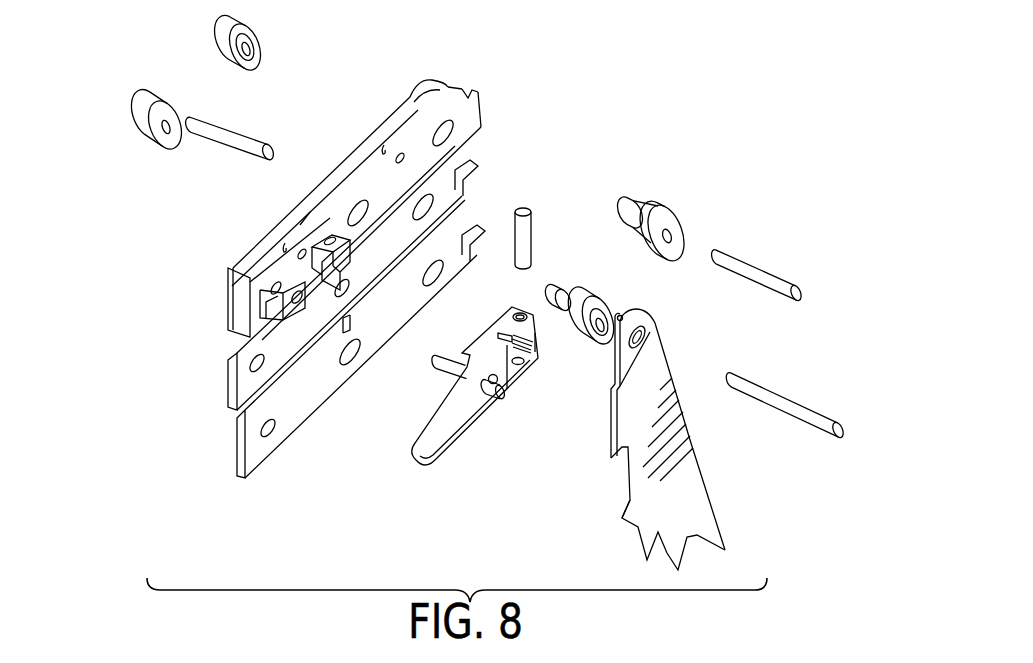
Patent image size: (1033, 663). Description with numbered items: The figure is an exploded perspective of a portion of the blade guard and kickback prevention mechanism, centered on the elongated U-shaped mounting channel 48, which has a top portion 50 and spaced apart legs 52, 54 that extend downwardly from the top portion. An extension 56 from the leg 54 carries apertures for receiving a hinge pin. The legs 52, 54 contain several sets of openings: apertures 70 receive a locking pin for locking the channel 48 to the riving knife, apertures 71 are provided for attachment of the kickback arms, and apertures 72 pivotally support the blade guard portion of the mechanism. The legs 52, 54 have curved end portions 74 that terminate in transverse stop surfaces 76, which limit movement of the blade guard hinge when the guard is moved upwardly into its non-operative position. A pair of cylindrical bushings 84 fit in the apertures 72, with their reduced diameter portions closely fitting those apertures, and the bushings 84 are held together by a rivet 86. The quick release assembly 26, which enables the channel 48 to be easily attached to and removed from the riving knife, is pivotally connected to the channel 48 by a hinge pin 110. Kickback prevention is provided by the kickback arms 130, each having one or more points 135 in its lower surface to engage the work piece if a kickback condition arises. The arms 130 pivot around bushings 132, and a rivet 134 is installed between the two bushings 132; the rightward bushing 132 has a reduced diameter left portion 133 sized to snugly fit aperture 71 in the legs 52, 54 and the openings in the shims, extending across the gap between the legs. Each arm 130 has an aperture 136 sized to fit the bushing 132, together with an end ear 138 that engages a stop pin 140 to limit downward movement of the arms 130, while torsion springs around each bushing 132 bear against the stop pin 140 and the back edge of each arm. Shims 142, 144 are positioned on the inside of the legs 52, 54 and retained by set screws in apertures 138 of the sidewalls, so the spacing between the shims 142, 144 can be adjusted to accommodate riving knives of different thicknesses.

The quick release assembly 26 is at (474, 436).
The U-shaped mounting channel 48 is at (250, 272).
The top portion 50 is at (423, 185).
The leg 52 is at (238, 308).
The leg 54 is at (472, 116).
The extension 56 is at (353, 267).
The apertures 70 is at (272, 289).
The apertures 71 is at (352, 215).
The apertures 72 is at (448, 139).
The curved end portions 74 is at (428, 82).
The transverse stop surfaces 76 is at (472, 90).
The cylindrical bushings 84 is at (231, 23).
The rivet 86 is at (768, 282).
The hinge pin 110 is at (533, 227).
The kickback arms 130 is at (659, 439).
The bushings 132 is at (142, 118).
The reduced diameter left portion 133 is at (563, 300).
The rivet 134 is at (785, 405).
The points 135 is at (620, 522).
The aperture 136 is at (642, 342).
The end ear / apertures 138 is at (400, 150).
The stop pin 140 is at (247, 138).
The shim 142 is at (243, 388).
The shim 144 is at (321, 339).